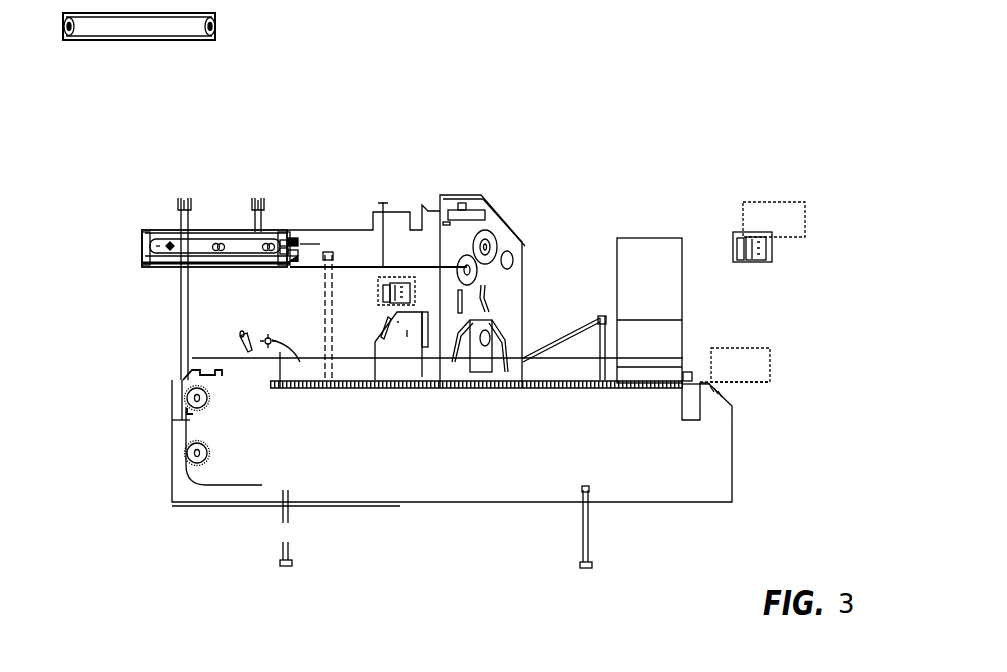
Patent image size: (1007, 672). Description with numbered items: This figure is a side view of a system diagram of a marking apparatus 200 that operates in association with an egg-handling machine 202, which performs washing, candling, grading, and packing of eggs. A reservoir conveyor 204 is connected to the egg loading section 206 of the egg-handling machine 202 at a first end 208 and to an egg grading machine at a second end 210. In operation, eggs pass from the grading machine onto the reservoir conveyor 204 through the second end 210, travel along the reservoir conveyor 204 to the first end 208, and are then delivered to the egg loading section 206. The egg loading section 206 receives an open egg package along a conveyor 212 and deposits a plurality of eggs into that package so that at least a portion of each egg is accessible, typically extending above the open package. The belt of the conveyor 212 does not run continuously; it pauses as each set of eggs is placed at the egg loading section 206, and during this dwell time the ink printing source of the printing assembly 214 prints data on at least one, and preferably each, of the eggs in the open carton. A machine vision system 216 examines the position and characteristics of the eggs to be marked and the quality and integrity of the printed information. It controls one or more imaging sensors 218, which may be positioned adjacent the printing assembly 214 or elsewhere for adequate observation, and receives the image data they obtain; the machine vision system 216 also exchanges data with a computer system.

The marking apparatus 200 is at (460, 320).
The egg-handling machine 202 is at (683, 505).
The reservoir conveyor 204 is at (200, 232).
The egg loading section 206 is at (460, 192).
The first end 208 is at (302, 231).
The second end 210 is at (138, 232).
The conveyor 212 is at (560, 390).
The printing assembly 214 is at (403, 352).
The machine vision system 216 is at (720, 378).
The imaging sensor 218 is at (795, 209).